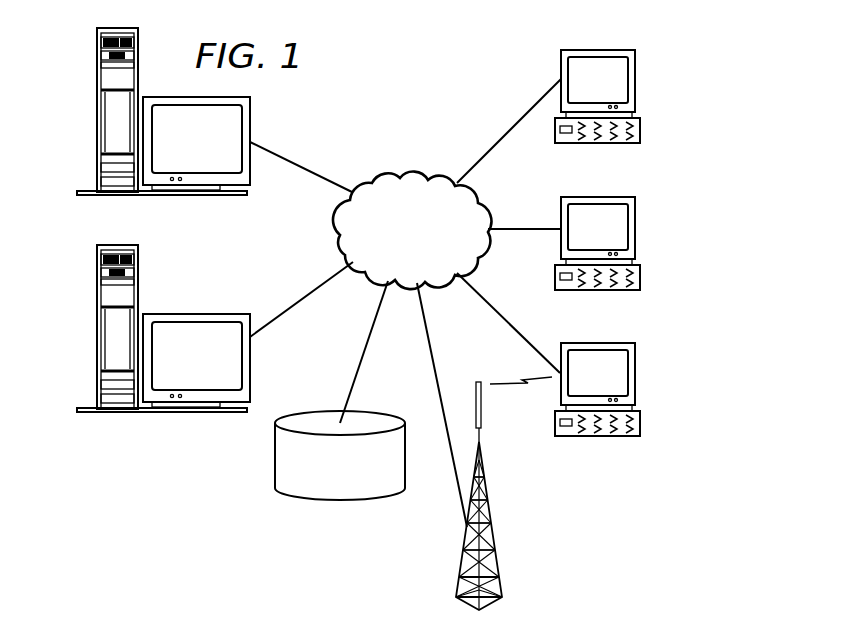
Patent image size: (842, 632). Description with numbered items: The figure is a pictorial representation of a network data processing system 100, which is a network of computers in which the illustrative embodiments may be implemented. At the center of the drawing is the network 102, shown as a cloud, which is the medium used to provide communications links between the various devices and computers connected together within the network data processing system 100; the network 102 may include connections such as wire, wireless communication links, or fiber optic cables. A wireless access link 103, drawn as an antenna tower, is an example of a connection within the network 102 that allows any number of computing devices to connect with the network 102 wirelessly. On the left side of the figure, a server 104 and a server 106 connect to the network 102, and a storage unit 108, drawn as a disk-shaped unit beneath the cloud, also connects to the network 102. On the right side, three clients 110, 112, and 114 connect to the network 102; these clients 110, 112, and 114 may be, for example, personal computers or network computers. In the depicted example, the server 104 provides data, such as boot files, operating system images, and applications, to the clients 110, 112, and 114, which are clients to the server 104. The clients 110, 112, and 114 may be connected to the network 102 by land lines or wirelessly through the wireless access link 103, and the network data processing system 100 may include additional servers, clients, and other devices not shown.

The network data processing system 100 is at (463, 65).
The network 102 is at (384, 179).
The wireless access link 103 is at (503, 573).
The server 104 is at (96, 113).
The server 106 is at (139, 343).
The storage unit 108 is at (323, 500).
The client 110 is at (636, 82).
The client 112 is at (627, 258).
The client 114 is at (627, 404).